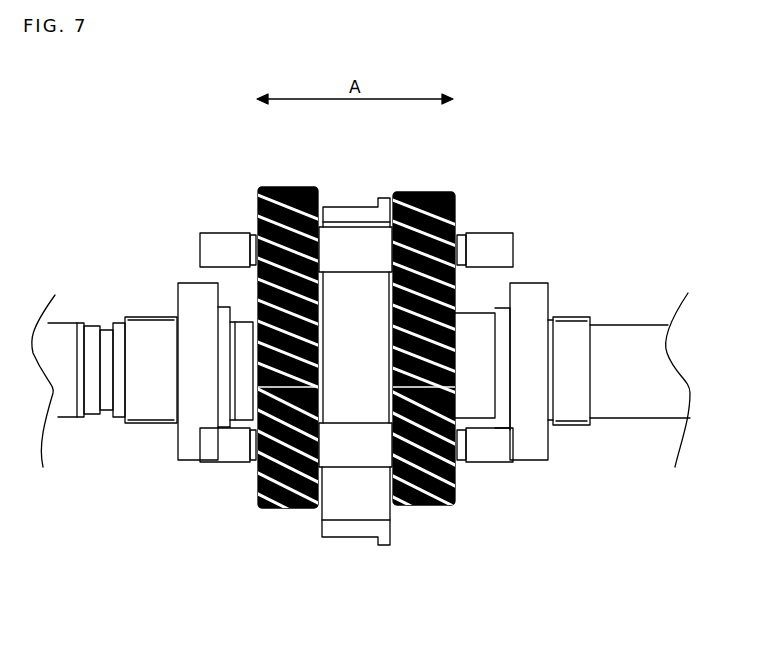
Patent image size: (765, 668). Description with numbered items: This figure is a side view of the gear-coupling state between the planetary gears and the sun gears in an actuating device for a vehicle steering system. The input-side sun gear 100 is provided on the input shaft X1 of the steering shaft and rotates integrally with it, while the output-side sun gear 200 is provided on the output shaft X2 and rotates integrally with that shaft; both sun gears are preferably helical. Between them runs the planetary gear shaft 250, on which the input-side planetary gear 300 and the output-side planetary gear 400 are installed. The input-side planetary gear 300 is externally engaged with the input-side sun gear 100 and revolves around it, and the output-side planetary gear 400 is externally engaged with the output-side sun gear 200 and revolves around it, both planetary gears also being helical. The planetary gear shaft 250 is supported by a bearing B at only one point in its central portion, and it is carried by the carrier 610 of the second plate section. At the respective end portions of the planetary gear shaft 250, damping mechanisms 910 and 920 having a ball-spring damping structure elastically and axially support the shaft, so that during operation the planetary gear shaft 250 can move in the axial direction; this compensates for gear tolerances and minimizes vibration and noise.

The input-side sun gear 100 is at (455, 338).
The output-side sun gear 200 is at (256, 366).
The planetary gear shaft 250 is at (370, 250).
The input-side planetary gear 300 is at (453, 212).
The output-side planetary gear 400 is at (258, 188).
The carrier 610 is at (350, 528).
The damping mechanism 910 is at (502, 245).
The damping mechanism 920 is at (216, 243).
The bearing B is at (348, 226).
The input shaft X1 is at (622, 405).
The output shaft X2 is at (67, 338).